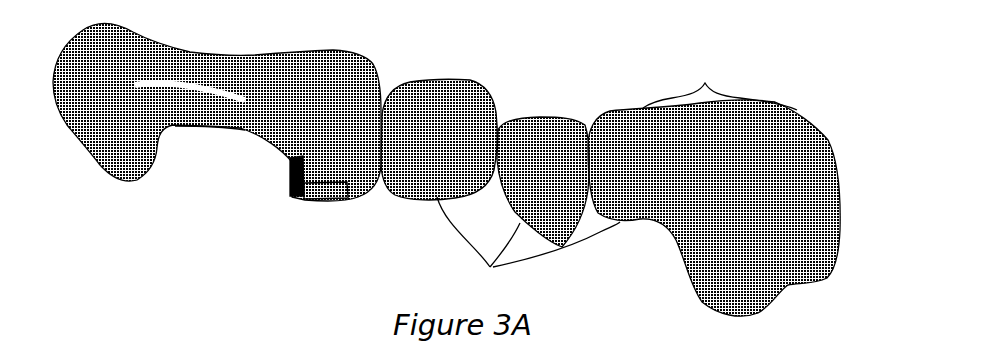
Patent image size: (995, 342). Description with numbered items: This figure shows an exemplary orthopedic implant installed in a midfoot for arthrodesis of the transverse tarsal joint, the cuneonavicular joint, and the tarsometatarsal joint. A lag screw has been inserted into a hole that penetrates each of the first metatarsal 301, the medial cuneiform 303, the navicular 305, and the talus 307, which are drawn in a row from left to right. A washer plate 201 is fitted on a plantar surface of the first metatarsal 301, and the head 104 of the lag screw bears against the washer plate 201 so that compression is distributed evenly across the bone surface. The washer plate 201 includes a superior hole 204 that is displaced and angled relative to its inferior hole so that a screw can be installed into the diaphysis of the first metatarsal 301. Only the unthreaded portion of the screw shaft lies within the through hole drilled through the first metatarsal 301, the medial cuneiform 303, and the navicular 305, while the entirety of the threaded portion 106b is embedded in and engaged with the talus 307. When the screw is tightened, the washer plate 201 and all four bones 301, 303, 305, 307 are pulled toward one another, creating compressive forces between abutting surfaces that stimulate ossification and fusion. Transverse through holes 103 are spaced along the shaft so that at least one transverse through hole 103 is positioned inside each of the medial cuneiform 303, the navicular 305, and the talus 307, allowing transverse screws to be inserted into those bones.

The first metatarsal 301 is at (240, 55).
The medial cuneiform 303 is at (437, 82).
The navicular 305 is at (533, 118).
The talus 307 is at (620, 112).
The threaded portion 106b is at (720, 83).
The transverse through holes 103 is at (528, 245).
The head 104 is at (293, 190).
The washer plate 201 is at (317, 197).
The superior hole 204 is at (233, 130).